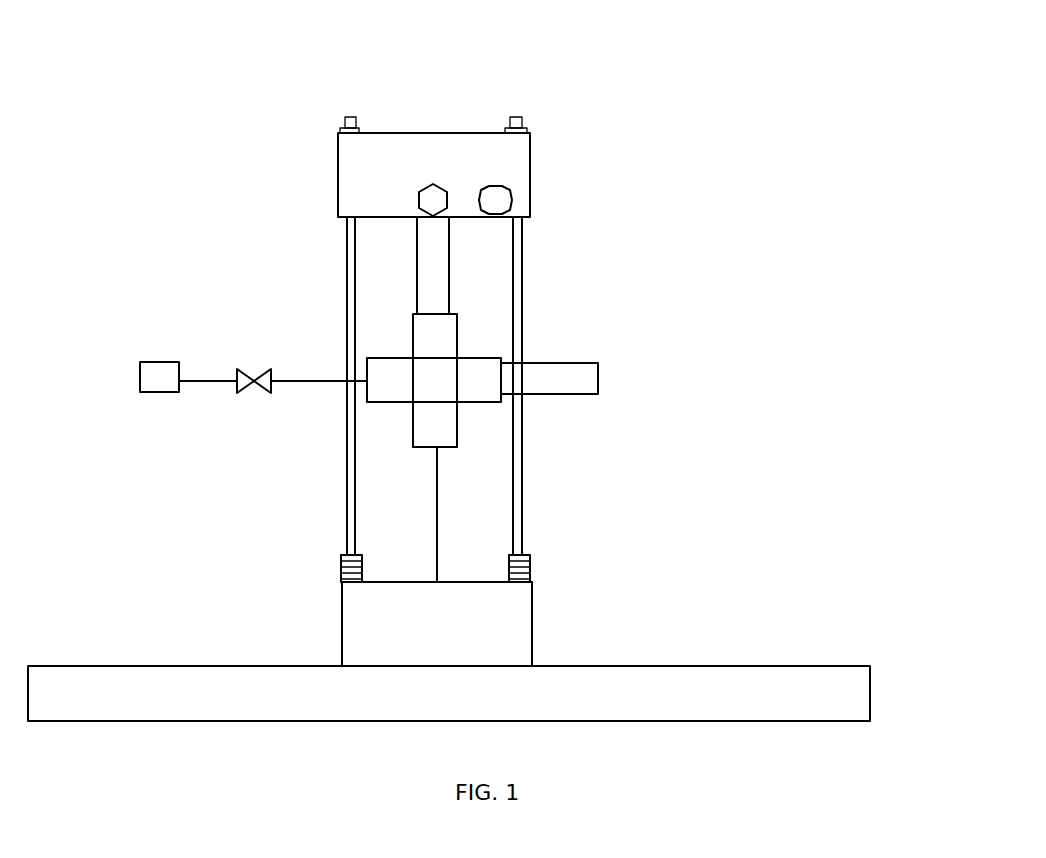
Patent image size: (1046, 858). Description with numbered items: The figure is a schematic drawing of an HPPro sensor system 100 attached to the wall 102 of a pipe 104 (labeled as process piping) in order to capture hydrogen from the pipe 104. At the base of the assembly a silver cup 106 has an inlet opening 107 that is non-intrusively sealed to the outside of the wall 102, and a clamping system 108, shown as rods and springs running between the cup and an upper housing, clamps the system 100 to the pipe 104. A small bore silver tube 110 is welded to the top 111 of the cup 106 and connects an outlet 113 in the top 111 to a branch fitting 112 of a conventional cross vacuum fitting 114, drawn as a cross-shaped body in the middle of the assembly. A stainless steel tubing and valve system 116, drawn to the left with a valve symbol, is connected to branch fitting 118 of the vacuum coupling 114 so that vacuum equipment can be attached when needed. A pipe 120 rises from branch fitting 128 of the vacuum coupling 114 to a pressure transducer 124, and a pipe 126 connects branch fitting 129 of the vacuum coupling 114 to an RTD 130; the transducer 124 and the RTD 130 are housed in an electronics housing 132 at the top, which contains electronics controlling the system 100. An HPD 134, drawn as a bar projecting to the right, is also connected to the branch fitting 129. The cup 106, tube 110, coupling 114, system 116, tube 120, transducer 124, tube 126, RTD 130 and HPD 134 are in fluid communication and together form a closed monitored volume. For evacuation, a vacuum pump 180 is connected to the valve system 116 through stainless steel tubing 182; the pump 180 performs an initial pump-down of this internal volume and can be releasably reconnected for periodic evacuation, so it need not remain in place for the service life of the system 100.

The HPPro sensor system 100 is at (688, 373).
The wall 102 is at (428, 662).
The pipe 104 is at (478, 703).
The silver cup 106 is at (475, 625).
The inlet opening 107 is at (452, 655).
The clamping system 108 is at (545, 548).
The small bore silver tube 110 is at (435, 523).
The top of cup 111 is at (457, 582).
The branch fitting 112 is at (427, 421).
The outlet 113 is at (426, 575).
The cross vacuum fitting 114 is at (440, 384).
The stainless steel tubing and valve system 116 is at (252, 368).
The branch fitting 118 is at (387, 377).
The pipe 120 is at (430, 257).
The pressure transducer 124 is at (432, 200).
The pipe 126 is at (503, 247).
The branch fitting 128 is at (427, 330).
The branch fitting 129 is at (470, 372).
The RTD 130 is at (495, 200).
The electronics housing 132 is at (532, 172).
The HPD 134 is at (510, 377).
The vacuum pump 180 is at (150, 377).
The stainless steel tubing 182 is at (206, 382).